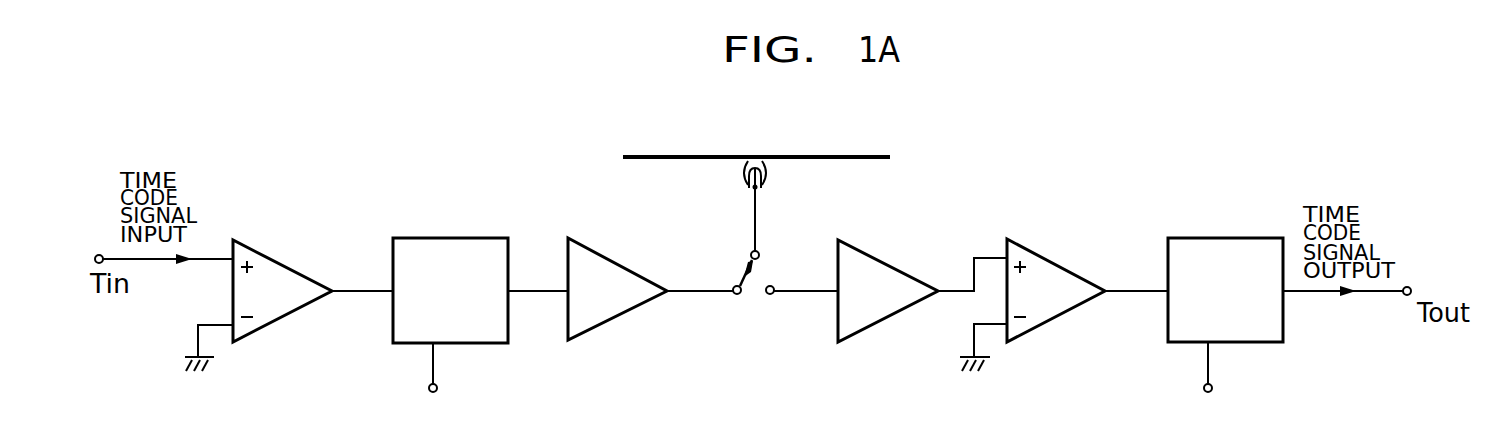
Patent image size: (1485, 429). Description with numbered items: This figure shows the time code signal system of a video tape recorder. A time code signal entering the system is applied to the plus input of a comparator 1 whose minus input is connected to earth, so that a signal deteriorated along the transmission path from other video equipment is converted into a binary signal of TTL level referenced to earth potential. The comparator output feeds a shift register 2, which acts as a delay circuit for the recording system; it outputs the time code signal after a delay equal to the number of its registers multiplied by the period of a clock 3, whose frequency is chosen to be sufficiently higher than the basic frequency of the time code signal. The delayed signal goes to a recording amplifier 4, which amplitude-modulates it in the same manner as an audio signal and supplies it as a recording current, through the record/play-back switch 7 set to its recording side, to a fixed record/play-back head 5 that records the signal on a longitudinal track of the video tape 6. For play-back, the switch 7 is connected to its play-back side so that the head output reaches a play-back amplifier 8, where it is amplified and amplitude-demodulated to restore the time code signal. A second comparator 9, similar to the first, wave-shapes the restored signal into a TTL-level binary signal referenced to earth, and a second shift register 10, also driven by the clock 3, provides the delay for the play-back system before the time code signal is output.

The comparator 1 is at (294, 270).
The shift register 2 is at (455, 238).
The clock 3 is at (438, 386).
The recording amplifier 4 is at (610, 317).
The fixed record/play-back head 5 is at (777, 165).
The video tape 6 is at (874, 155).
The record/play-back switch 7 is at (748, 268).
The play-back amplifier 8 is at (887, 262).
The comparator 9 is at (1060, 266).
The shift register 10 is at (1236, 238).